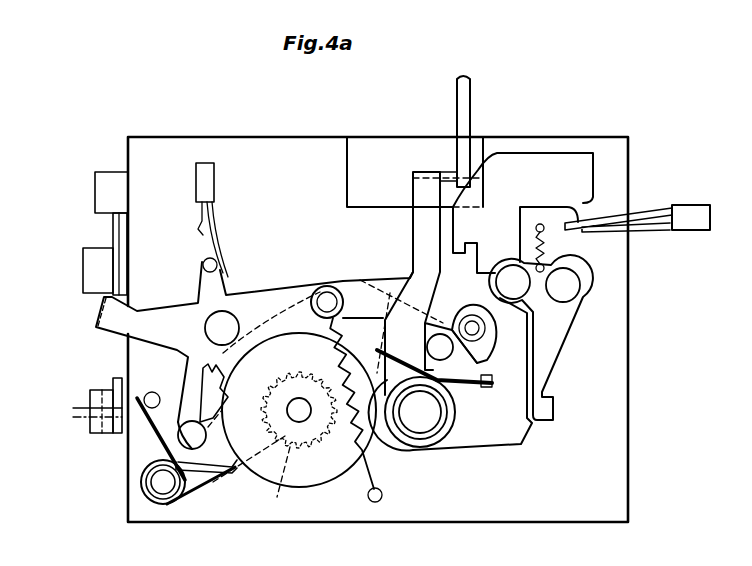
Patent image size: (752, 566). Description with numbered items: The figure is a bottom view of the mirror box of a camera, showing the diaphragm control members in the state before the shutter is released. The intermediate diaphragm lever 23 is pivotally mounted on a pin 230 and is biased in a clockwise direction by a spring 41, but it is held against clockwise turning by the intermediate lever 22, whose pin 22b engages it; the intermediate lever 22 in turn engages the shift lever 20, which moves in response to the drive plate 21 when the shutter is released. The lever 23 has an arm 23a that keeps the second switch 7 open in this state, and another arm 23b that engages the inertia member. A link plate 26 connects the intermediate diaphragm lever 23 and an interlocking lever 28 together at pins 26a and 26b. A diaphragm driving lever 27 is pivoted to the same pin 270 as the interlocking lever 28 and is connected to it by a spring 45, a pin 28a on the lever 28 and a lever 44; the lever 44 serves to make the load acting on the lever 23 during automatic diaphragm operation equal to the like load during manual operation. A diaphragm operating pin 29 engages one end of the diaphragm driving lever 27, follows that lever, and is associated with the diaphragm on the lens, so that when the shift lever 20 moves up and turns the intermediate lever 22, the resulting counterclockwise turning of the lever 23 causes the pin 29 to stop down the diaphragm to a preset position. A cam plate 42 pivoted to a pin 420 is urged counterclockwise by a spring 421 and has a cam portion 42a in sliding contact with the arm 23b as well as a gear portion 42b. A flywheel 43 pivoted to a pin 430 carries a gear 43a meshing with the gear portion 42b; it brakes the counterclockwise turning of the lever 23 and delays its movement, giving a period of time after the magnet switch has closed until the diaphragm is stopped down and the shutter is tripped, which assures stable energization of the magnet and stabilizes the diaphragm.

The second switch 7 is at (215, 182).
The shift lever 20 is at (102, 392).
The drive plate 21 is at (75, 395).
The intermediate lever 22 is at (113, 240).
The pin 22b is at (83, 272).
The intermediate diaphragm lever 23 is at (258, 306).
The arm 23a is at (204, 260).
The arm 23b is at (194, 448).
The pin 230 is at (210, 320).
The link plate 26 is at (382, 300).
The pin 26a is at (327, 298).
The pin 26b is at (472, 325).
The diaphragm driving lever 27 is at (414, 232).
The pin 270 is at (421, 425).
The interlocking lever 28 is at (484, 352).
The pin 28a is at (430, 347).
The diaphragm operating pin 29 is at (472, 100).
The spring 41 is at (345, 417).
The cam plate 42 is at (221, 458).
The cam portion 42a is at (207, 424).
The gear portion 42b is at (222, 378).
The pin 420 is at (157, 480).
The spring 421 is at (150, 443).
The flywheel 43 is at (318, 488).
The gear 43a is at (277, 455).
The pin 430 is at (301, 398).
The lever 44 is at (478, 432).
The spring 45 is at (482, 388).